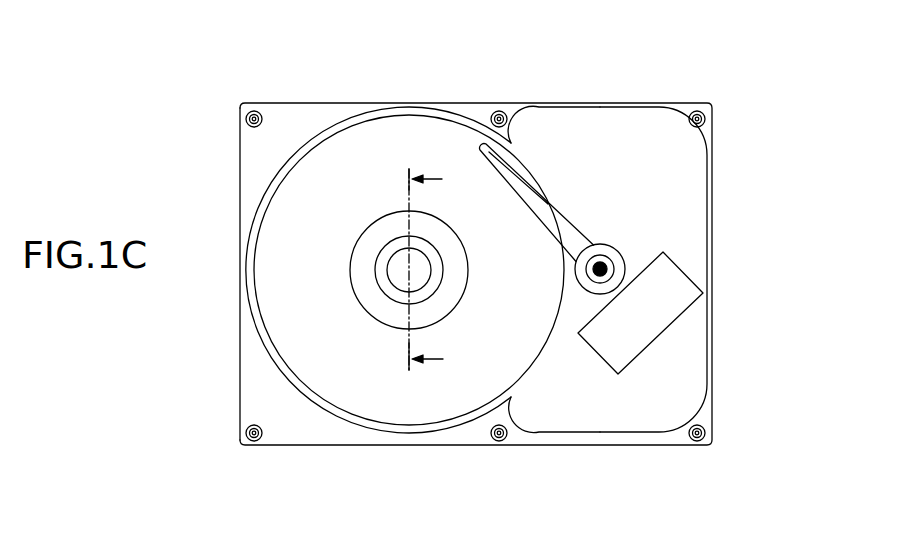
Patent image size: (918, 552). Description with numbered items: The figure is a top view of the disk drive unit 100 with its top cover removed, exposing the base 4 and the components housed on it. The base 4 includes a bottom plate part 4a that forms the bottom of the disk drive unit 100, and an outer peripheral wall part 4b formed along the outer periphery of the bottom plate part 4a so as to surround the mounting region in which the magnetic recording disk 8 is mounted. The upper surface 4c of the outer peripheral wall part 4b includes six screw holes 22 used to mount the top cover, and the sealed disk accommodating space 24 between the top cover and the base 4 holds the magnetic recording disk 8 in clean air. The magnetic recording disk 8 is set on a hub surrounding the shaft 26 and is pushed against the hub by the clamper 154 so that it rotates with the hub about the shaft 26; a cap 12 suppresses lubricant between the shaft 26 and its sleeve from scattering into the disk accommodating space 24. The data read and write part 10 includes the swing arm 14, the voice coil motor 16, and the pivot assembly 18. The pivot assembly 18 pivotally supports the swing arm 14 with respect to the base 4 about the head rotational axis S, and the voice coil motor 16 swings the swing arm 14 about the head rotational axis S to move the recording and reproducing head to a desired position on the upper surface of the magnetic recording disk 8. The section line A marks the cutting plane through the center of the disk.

The base 4 is at (712, 162).
The bottom plate part 4a is at (562, 120).
The outer peripheral wall part 4b is at (318, 120).
The upper surface 4c is at (240, 155).
The magnetic recording disk 8 is at (403, 132).
The data read and write part 10 is at (657, 259).
The cap 12 is at (397, 294).
The swing arm 14 is at (577, 229).
The voice coil motor 16 is at (679, 313).
The pivot assembly 18 is at (612, 261).
The screw holes 22 is at (254, 111).
The disk accommodating space 24 is at (620, 120).
The shaft 26 is at (397, 273).
The clamper 154 is at (370, 299).
The head rotational axis S is at (603, 276).
The section line A- A is at (437, 269).
The disk drive unit 100 is at (457, 548).